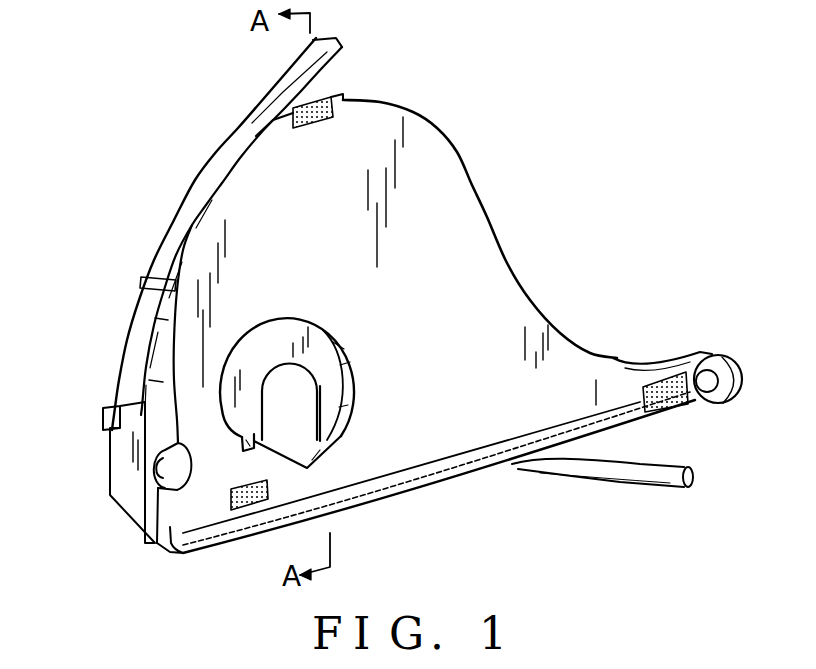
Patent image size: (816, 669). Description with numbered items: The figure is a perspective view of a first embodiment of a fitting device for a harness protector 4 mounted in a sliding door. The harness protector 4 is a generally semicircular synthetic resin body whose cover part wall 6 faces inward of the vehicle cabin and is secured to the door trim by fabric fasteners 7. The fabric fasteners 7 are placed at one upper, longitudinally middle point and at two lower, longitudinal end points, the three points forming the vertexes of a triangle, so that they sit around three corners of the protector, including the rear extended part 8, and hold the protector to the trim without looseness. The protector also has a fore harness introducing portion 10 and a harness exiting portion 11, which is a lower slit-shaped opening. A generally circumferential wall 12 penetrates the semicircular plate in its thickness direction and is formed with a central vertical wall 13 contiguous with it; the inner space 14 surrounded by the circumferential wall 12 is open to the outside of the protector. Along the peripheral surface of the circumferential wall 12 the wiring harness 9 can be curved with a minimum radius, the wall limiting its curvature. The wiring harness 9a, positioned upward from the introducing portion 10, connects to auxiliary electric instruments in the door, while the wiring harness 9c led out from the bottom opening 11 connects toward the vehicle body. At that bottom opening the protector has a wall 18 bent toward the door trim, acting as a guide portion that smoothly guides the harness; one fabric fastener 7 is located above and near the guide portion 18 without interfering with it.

The harness protector 4 is at (463, 147).
The cover part wall 6 is at (473, 229).
The fabric fastener 7 is at (340, 103).
The rear extended part 8 is at (614, 388).
The wiring harness 9 is at (538, 474).
The wiring harness 9a is at (203, 182).
The wiring harness 9c is at (657, 478).
The fore harness introducing portion 10 is at (112, 448).
The harness exiting portion 11 is at (487, 477).
The circumferential wall 12 is at (343, 433).
The central vertical wall 13 is at (290, 340).
The inner space 14 is at (293, 407).
The wall 18 is at (197, 554).